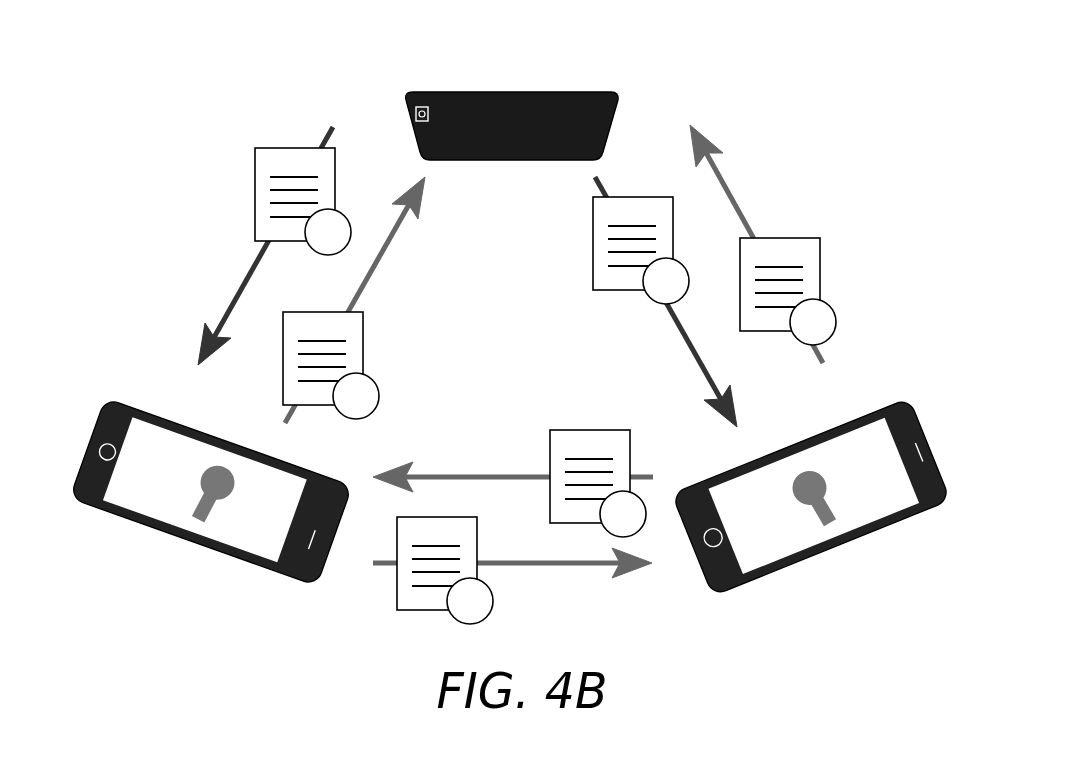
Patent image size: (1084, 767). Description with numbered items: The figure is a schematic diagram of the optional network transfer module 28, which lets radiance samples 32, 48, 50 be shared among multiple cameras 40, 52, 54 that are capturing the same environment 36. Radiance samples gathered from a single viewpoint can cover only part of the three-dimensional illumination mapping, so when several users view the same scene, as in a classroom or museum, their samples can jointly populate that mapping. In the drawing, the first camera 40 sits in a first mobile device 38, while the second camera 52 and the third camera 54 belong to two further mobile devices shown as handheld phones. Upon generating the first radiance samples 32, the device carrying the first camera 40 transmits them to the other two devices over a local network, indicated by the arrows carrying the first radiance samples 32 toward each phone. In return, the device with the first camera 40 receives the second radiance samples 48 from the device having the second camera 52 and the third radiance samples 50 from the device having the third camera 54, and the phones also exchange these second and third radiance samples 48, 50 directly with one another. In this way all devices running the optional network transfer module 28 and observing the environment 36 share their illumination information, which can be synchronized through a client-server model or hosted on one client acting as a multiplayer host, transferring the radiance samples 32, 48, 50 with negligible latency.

The optional network transfer module 28 is at (126, 176).
The first radiance samples 32 is at (255, 180).
The environment 36 is at (513, 357).
The first mobile device 38 is at (585, 92).
The first camera 40 is at (410, 98).
The second radiance samples 48 is at (363, 340).
The third radiance samples 50 is at (787, 238).
The second camera 52 is at (240, 492).
The third camera 54 is at (813, 473).